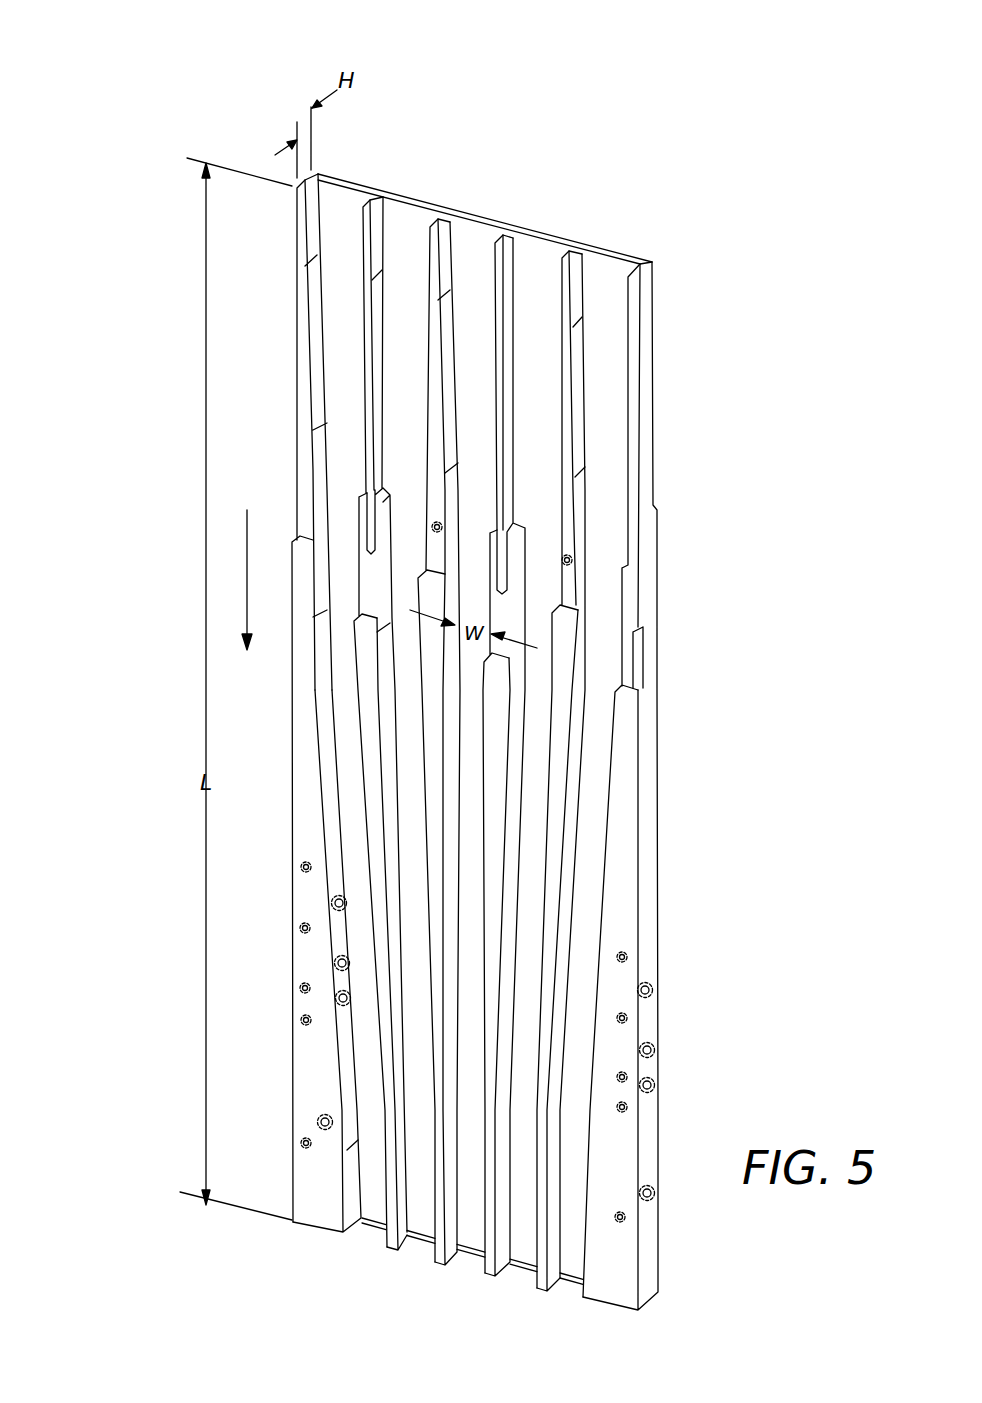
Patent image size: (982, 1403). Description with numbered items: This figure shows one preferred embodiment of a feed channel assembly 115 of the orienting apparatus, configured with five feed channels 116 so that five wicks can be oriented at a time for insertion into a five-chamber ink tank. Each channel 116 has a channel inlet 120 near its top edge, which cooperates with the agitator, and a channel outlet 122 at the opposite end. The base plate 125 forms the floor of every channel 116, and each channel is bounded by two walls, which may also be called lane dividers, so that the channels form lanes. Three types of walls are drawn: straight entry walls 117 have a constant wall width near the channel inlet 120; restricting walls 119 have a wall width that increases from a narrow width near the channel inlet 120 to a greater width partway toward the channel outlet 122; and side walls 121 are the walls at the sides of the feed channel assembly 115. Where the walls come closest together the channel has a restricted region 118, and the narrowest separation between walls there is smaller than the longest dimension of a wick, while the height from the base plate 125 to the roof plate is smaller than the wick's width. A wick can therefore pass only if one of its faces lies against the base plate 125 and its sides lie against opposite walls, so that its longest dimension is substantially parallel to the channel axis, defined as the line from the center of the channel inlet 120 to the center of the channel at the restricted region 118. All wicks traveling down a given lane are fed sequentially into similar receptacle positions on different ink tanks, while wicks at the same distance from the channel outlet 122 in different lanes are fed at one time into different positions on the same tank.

The feed channel assembly 115 is at (172, 83).
The feed channel 116 is at (528, 240).
The straight entry wall 117 is at (513, 272).
The restricted region 118 is at (552, 362).
The restricting wall 119 is at (580, 450).
The channel inlet 120 is at (339, 204).
The side wall 121 is at (648, 362).
The channel outlet 122 is at (378, 1230).
The base plate 125 is at (341, 325).